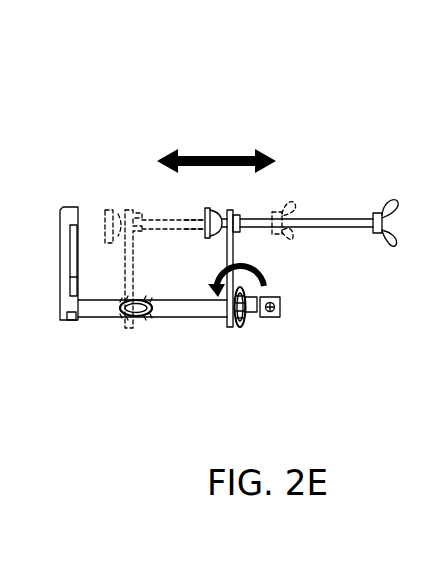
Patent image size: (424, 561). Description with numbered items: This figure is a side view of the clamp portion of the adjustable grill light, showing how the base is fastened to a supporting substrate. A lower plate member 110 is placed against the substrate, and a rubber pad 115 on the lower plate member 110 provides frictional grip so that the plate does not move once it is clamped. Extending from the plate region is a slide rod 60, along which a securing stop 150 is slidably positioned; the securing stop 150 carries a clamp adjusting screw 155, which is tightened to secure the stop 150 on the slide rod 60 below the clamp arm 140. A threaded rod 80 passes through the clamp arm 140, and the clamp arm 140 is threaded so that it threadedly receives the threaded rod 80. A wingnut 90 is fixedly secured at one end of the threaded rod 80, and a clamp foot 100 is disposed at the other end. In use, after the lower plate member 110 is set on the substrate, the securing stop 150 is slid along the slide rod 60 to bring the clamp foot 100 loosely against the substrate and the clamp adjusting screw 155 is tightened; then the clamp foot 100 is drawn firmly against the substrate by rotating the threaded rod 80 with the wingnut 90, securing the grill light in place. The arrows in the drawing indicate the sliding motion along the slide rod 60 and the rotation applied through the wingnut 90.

The slide rod 60 is at (180, 310).
The threaded rod 80 is at (327, 219).
The wingnut 90 is at (388, 200).
The clamp foot 100 is at (205, 206).
The lower plate member 110 is at (65, 207).
The rubber pad 115 is at (76, 225).
The clamp arm 140 is at (236, 250).
The securing stop 150 is at (250, 294).
The clamp adjusting screw 155 is at (244, 323).